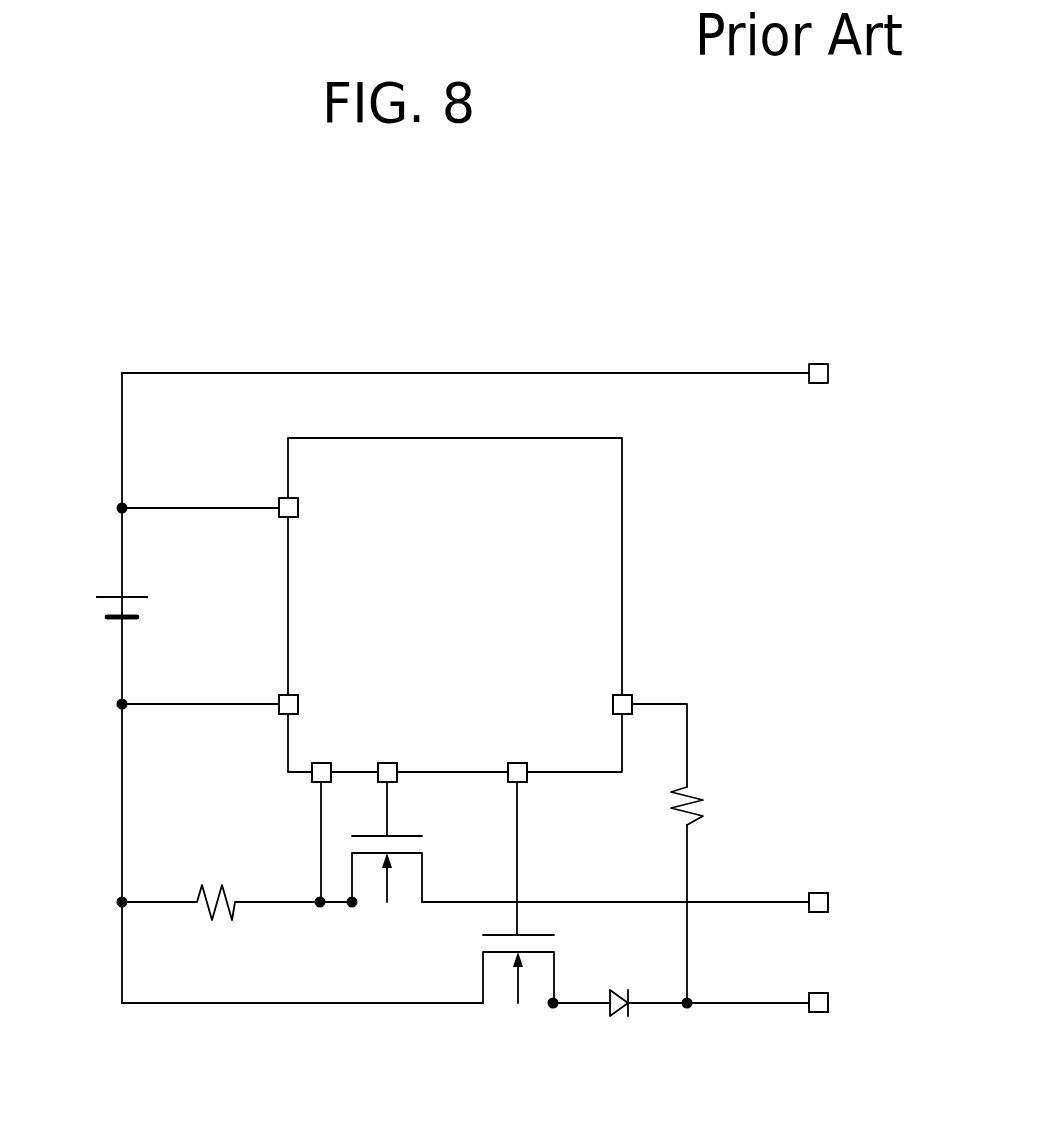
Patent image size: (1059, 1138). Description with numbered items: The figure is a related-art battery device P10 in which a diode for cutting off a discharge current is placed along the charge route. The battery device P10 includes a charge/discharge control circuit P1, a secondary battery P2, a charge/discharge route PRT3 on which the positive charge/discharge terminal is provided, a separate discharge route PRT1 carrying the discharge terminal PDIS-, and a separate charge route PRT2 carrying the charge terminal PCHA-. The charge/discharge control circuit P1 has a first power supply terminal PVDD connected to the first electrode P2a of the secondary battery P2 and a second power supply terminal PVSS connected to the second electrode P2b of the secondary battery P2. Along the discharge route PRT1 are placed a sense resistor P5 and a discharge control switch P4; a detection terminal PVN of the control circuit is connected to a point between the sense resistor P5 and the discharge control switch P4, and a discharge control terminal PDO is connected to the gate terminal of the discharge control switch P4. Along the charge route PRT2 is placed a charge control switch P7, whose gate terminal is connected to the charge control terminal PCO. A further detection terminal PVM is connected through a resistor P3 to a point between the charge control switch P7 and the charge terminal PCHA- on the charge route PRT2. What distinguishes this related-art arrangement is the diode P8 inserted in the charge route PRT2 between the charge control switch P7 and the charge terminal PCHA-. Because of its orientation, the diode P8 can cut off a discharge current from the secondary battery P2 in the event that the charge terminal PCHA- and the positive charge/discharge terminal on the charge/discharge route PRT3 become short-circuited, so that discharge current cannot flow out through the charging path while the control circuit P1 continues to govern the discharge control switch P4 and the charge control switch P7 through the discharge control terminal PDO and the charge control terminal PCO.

The charge/discharge control circuit P1 is at (623, 484).
The secondary battery P2 is at (97, 607).
The first electrode P2a is at (134, 594).
The second electrode P2b is at (137, 620).
The resistor P3 is at (705, 801).
The discharge control switch P4 is at (372, 904).
The sense resistor P5 is at (217, 922).
The charge control switch P7 is at (534, 1006).
The diode P8 is at (622, 1010).
The battery device P10 is at (531, 370).
The discharge route PRT1 is at (722, 904).
The charge route PRT2 is at (722, 1005).
The charge/discharge route PRT3 is at (659, 372).
The discharge terminal PDIS- is at (853, 903).
The charge terminal PCHA- is at (853, 1004).
The first power supply terminal PVDD is at (318, 509).
The second power supply terminal PVSS is at (317, 704).
The detection terminal PVM is at (600, 706).
The detection terminal PVN is at (318, 757).
The discharge control terminal PDO is at (385, 757).
The charge control terminal PCO is at (515, 757).